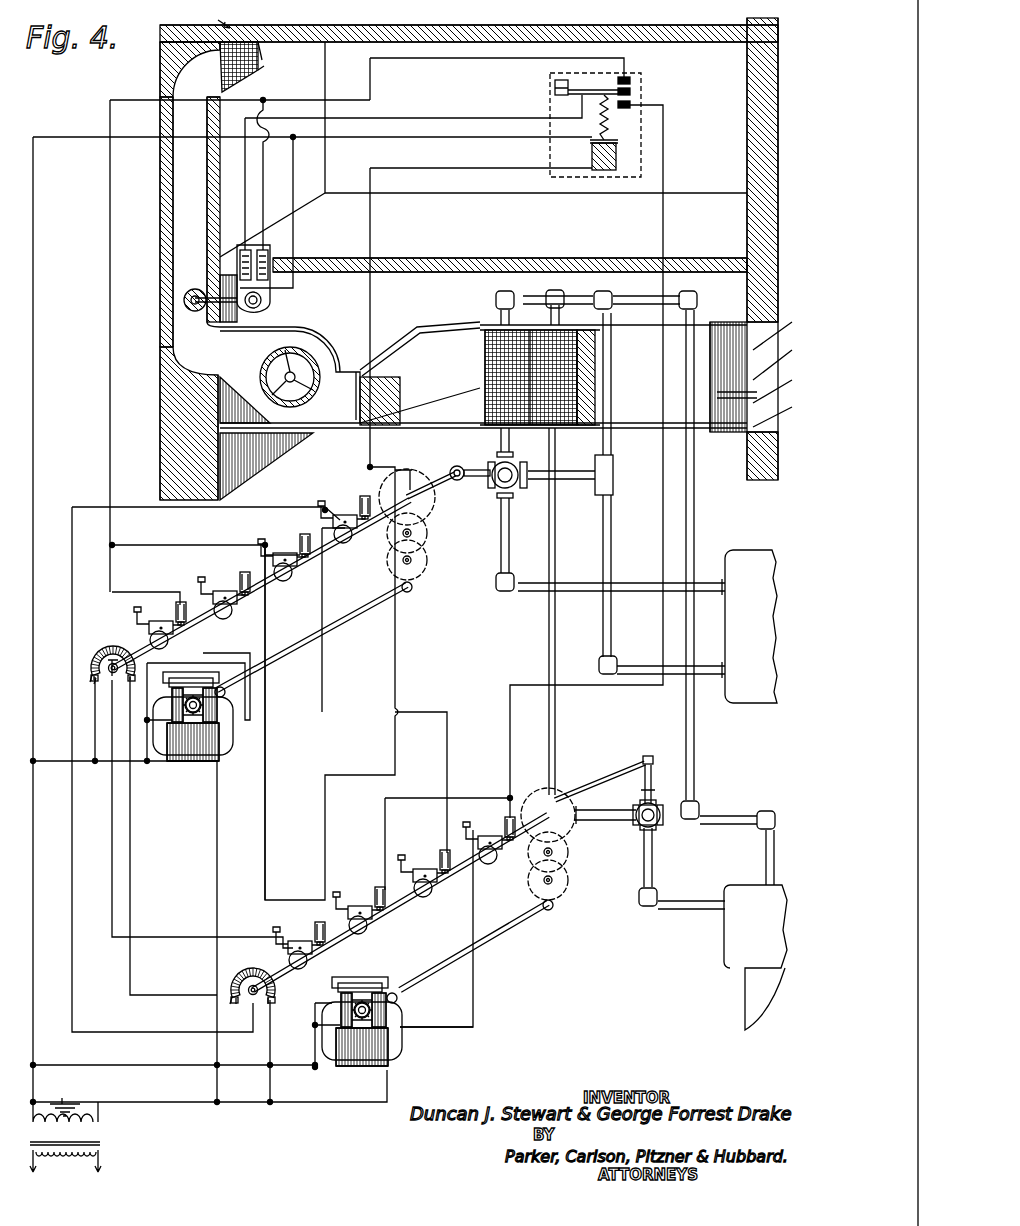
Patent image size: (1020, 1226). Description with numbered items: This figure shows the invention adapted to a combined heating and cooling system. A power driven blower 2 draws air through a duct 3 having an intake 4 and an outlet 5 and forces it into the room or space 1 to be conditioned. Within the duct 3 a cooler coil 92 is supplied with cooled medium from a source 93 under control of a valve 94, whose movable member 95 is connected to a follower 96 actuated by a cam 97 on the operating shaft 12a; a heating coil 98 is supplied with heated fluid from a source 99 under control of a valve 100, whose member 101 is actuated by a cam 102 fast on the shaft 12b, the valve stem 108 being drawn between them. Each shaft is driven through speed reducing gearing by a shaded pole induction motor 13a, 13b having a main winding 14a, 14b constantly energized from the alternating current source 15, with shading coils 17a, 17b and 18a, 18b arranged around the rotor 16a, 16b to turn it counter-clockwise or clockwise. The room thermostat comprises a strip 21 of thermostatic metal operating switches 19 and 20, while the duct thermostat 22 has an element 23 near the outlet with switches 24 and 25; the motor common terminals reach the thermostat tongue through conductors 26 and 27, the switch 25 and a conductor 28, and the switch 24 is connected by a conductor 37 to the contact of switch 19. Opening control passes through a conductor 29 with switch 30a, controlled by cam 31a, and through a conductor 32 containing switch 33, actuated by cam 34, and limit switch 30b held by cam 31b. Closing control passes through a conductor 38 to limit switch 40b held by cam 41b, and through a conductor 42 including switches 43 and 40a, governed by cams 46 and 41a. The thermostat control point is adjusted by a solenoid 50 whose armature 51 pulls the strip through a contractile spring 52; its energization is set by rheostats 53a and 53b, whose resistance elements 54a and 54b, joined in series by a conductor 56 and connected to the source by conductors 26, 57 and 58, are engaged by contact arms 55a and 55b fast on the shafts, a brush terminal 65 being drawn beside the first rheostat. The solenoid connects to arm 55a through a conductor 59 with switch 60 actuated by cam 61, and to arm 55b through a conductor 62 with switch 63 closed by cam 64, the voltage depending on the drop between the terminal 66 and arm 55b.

The room or space 1 is at (232, 184).
The power driven blower 2 is at (268, 366).
The duct 3 is at (461, 339).
The intake 4 is at (757, 378).
The outlet 5 is at (262, 54).
The operating shaft 12a is at (450, 470).
The operating shaft 12b is at (612, 778).
The electric motor 13a is at (232, 766).
The electric motor 13b is at (410, 1064).
The main winding 14a is at (195, 766).
The main winding 14b is at (362, 1070).
The source of alternating current 15 is at (98, 1142).
The rotor 16a is at (200, 700).
The rotor 16b is at (366, 1002).
The shading coils 17a is at (228, 696).
The shading coils 17b is at (396, 1003).
The shading coils 18a is at (176, 706).
The shading coils 18b is at (338, 1004).
The switch 19 is at (632, 80).
The switch 20 is at (634, 104).
The strip of thermostatic metal 21 is at (590, 95).
The duct thermostat 22 is at (278, 307).
The element 23 is at (196, 290).
The switch 24 is at (263, 246).
The switch 25 is at (245, 246).
The conductor 26 is at (356, 140).
The conductor 27 is at (293, 178).
The conductor 28 is at (450, 118).
The conductor 29 is at (457, 58).
The switch 30a is at (176, 618).
The limit switch 30b is at (440, 862).
The cam 31a is at (170, 641).
The cam 31b is at (432, 893).
The conductor 32 is at (172, 540).
The switch 33 is at (298, 546).
The cam 34 is at (287, 580).
The conductor 37 is at (263, 160).
The conductor 38 is at (664, 208).
The switch 40a is at (238, 580).
The limit switch 40b is at (506, 828).
The cam 41a is at (228, 610).
The cam 41b is at (494, 866).
The conductor 42 is at (265, 815).
The switch 43 is at (380, 905).
The cam 46 is at (368, 928).
The solenoid 50 is at (616, 160).
The armature 51 is at (614, 141).
The contractile spring 52 is at (612, 118).
The rheostat 53a is at (118, 643).
The rheostat 53b is at (262, 960).
The resistance element 54a is at (93, 652).
The resistance element 54b is at (248, 966).
The contact arm 55a is at (95, 680).
The contact arm 55b is at (262, 1002).
The conductor 56 is at (130, 828).
The conductor 57 is at (97, 770).
The conductor 58 is at (253, 1098).
The conductor 59 is at (458, 173).
The switch 60 is at (299, 938).
The cam 61 is at (308, 964).
The conductor 62 is at (247, 494).
The switch 63 is at (344, 509).
The cam 64 is at (350, 545).
The contact brush 65 is at (93, 668).
The terminal 66 is at (233, 1001).
The cooler coil 92 is at (500, 365).
The source of cooled medium 93 is at (762, 560).
The valve 94 is at (525, 496).
The movable member 95 is at (500, 494).
The follower 96 is at (472, 480).
The cam 97 is at (455, 480).
The coil 98 is at (572, 355).
The source of heated fluid 99 is at (745, 885).
The valve 100 is at (665, 831).
The member 101 is at (638, 826).
The cam 102 is at (650, 758).
The valve stem 108 is at (653, 781).